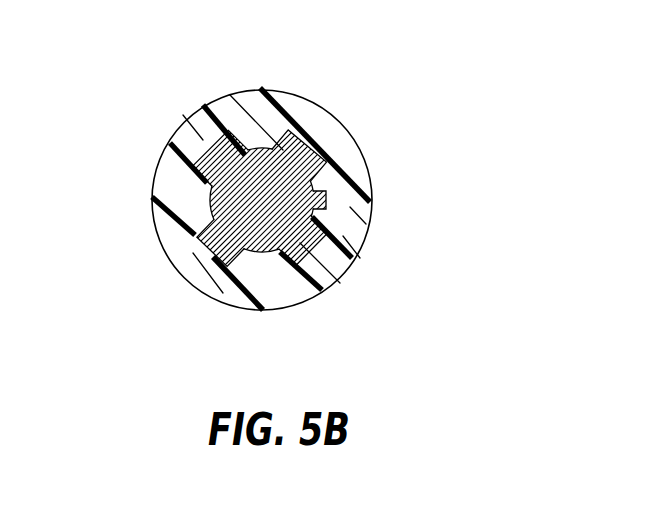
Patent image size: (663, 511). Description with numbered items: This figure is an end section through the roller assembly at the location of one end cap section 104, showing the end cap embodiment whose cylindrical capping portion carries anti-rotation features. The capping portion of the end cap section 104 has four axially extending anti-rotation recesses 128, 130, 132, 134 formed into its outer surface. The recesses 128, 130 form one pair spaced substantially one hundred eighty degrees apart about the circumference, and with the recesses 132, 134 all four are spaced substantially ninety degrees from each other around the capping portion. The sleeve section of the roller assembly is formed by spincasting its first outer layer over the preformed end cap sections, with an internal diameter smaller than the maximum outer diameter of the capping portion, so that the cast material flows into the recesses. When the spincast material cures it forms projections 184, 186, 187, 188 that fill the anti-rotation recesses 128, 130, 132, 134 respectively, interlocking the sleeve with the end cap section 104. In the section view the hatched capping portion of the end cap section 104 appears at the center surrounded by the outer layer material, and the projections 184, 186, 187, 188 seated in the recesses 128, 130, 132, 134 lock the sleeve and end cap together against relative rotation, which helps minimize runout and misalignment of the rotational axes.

The end cap section 104 is at (330, 278).
The anti-rotation recess 130 is at (290, 201).
The anti-rotation recess 134 is at (238, 165).
The projection 186 is at (278, 150).
The projection 187 is at (318, 232).
The projection 188 is at (228, 233).
The anti-rotation recess 132 is at (274, 240).
The anti-rotation recess 128 is at (205, 180).
The projection 184 is at (213, 240).